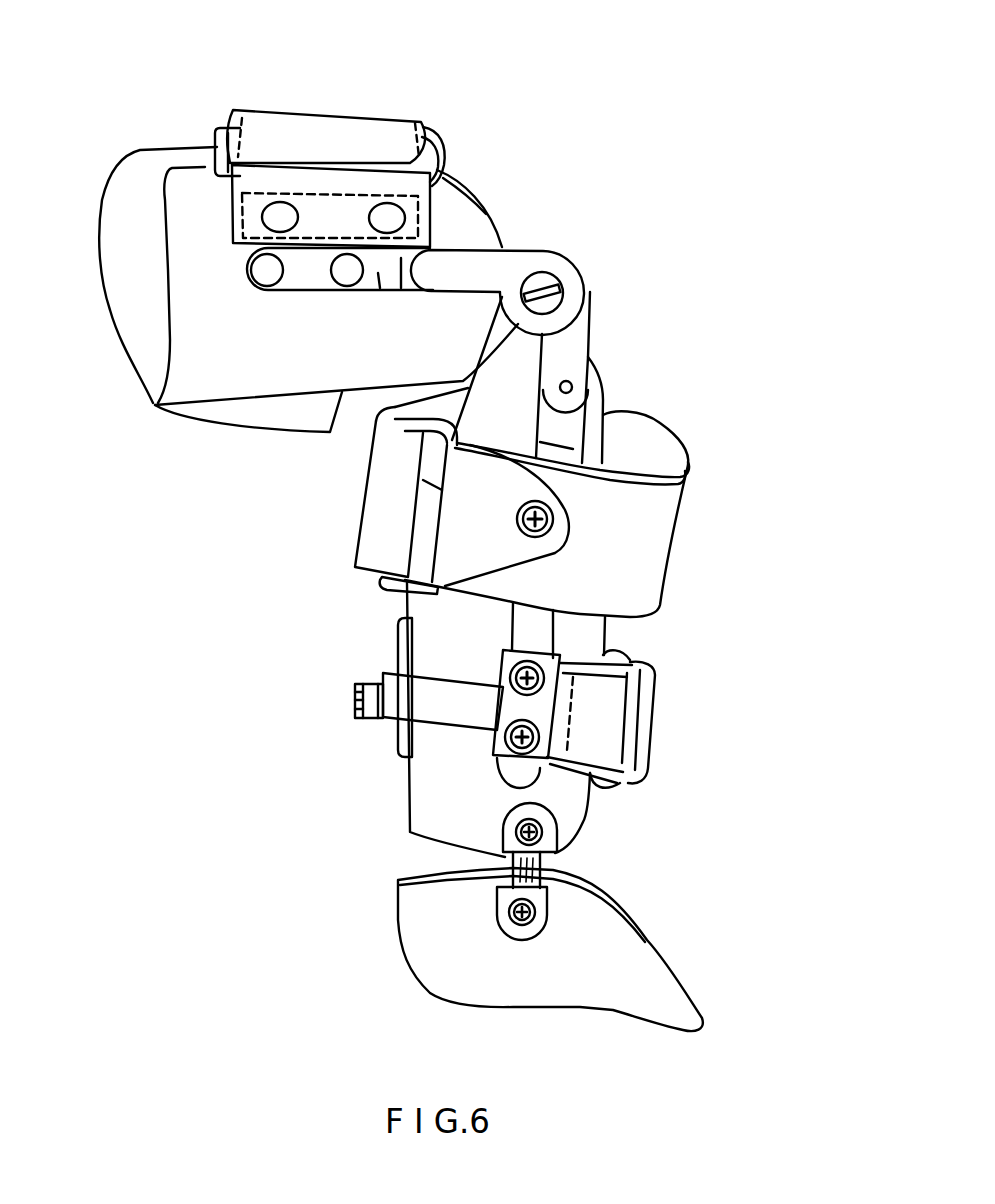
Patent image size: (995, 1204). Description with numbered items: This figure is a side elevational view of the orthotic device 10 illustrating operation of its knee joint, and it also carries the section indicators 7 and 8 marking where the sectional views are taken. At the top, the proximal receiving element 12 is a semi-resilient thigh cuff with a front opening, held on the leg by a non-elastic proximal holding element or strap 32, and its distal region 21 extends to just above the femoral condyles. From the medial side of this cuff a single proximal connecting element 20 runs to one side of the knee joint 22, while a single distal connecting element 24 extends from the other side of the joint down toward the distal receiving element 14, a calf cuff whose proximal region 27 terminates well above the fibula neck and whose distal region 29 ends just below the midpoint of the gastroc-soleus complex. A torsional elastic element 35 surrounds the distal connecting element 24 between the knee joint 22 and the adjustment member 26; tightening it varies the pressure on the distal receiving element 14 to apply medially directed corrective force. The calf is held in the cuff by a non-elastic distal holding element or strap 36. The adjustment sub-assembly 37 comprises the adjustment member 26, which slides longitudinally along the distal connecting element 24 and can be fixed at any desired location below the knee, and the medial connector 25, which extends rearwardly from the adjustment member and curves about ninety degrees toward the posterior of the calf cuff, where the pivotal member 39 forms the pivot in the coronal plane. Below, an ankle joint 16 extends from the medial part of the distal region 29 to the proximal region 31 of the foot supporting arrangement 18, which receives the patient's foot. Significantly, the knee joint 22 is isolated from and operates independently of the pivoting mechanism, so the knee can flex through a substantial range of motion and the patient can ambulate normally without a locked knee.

The orthotic device 10 is at (658, 185).
The proximal receiving element 12 is at (140, 157).
The distal receiving element 14 is at (603, 400).
The ankle joint 16 is at (545, 877).
The foot supporting arrangement 18 is at (603, 997).
The proximal connecting element 20 is at (383, 280).
The distal region of the proximal receiving element 21 is at (458, 218).
The knee joint 22 is at (567, 275).
The distal connecting element 24 is at (543, 626).
The medial connector 25 is at (423, 700).
The adjustment member 26 is at (492, 755).
The proximal region of the distal receiving element 27 is at (598, 453).
The distal region of the distal receiving element 29 is at (474, 836).
The proximal region of the foot supporting element 31 is at (467, 888).
The proximal holding element 32 is at (320, 123).
The torsional elastic element 35 is at (640, 578).
The distal holding element 36 is at (638, 743).
The adjustment sub-assembly 37 is at (452, 722).
The pivotal member 39 is at (355, 693).
The section line 7- 7 is at (368, 607).
The section line 8- 8 is at (377, 397).